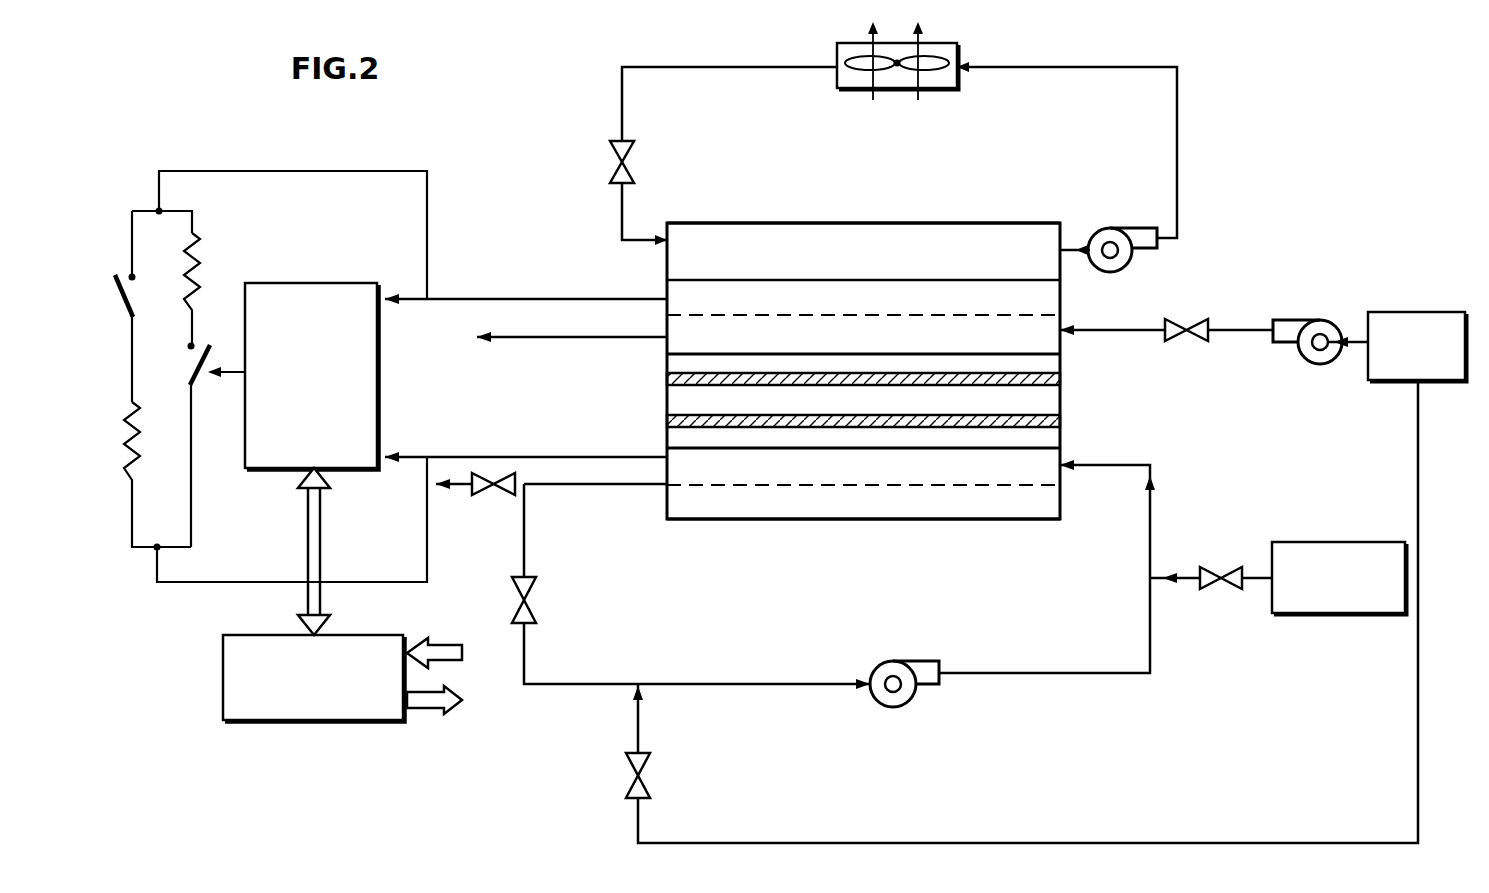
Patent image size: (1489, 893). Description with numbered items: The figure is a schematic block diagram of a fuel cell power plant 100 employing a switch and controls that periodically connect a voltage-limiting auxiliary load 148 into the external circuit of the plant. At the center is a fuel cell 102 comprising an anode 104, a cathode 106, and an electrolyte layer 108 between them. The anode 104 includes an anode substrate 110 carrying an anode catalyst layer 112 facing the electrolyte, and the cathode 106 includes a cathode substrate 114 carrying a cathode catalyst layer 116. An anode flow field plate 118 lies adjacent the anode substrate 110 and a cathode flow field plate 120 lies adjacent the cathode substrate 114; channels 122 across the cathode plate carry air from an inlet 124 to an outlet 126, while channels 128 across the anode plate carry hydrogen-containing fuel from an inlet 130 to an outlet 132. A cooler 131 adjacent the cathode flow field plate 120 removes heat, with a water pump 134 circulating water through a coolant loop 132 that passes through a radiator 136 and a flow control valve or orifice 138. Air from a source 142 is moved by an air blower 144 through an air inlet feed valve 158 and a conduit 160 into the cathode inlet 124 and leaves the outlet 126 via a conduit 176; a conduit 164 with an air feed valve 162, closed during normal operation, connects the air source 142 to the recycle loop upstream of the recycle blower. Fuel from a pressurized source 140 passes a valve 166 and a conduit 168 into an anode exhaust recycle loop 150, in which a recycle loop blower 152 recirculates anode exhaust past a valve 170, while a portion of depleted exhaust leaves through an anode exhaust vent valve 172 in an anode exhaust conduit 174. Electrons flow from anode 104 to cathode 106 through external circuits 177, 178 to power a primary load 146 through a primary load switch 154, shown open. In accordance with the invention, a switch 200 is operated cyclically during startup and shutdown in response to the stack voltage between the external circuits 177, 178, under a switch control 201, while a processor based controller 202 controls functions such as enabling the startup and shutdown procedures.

The fuel cell system 100 is at (1290, 113).
The fuel cell 102 is at (765, 213).
The anode 104 is at (1066, 416).
The cathode 106 is at (1066, 354).
The electrolyte layer 108 is at (1057, 403).
The anode substrate 110 is at (788, 442).
The anode catalyst layer 112 is at (667, 425).
The cathode substrate 114 is at (790, 362).
The cathode catalyst layer 116 is at (667, 380).
The anode flow field plate 118 is at (891, 511).
The cathode flow field plate 120 is at (1053, 296).
The channels 122 is at (690, 314).
The inlet 124 is at (1063, 330).
The outlet 126 is at (666, 337).
The channels 128 is at (697, 486).
The inlet 130 is at (1062, 467).
The cooler 131 is at (892, 228).
The outlet 132 is at (1048, 66).
The water pump 134 is at (1122, 235).
The radiator 136 is at (943, 41).
The flow control valve or orifice 138 is at (632, 162).
The source of hydrogen containing fuel 140 is at (1346, 541).
The source of air 142 is at (1418, 311).
The air blower 144 is at (1308, 325).
The primary load 146 is at (146, 436).
The auxiliary load 148 is at (200, 277).
The anode exhaust recycle loop 150 is at (606, 684).
The recycle loop blower 152 is at (906, 666).
The primary load switch 154 is at (136, 296).
The air inlet feed valve 158 is at (1186, 318).
The conduit 160 is at (1093, 331).
The air feed valve 162 is at (644, 775).
The conduit 164 is at (970, 843).
The valve 166 is at (1218, 576).
The conduit 168 is at (1186, 581).
The valve 170 is at (528, 600).
The anode exhaust vent valve 172 is at (490, 494).
The anode exhaust conduit 174 is at (543, 486).
The conduit 176 is at (518, 336).
The external circuit 177 is at (220, 170).
The external circuit 178 is at (190, 583).
The switch 200 is at (188, 363).
The switch control 201 is at (332, 282).
The processor based controller 202 is at (365, 633).